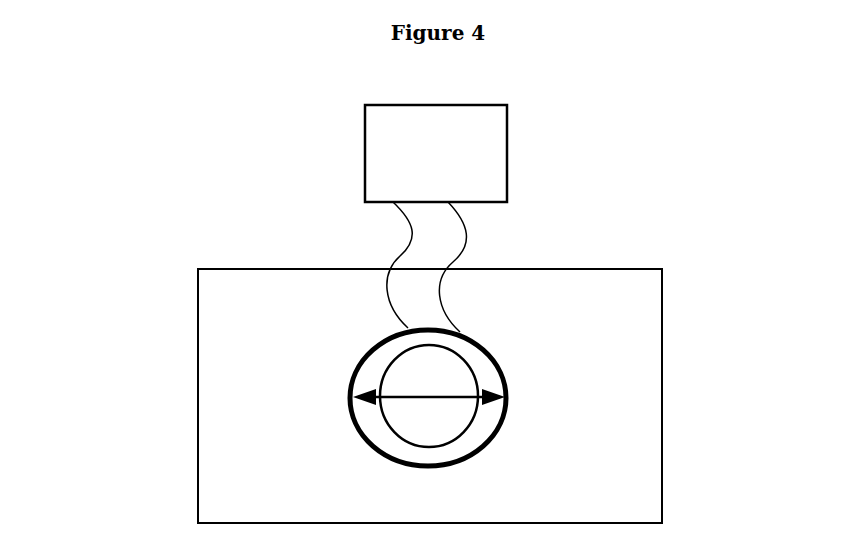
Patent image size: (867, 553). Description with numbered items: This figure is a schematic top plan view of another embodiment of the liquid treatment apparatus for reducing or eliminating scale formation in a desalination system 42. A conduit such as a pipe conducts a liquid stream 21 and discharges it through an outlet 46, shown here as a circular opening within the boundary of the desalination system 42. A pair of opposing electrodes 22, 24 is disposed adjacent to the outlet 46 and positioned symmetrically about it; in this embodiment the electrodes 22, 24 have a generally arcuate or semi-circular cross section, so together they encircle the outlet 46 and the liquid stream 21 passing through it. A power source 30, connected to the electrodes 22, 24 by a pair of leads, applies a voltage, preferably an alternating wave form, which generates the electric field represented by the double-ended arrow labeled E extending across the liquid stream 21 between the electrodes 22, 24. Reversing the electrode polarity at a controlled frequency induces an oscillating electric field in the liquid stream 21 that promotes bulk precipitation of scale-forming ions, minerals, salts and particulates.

The liquid stream 21 is at (280, 438).
The electrode 22 is at (357, 372).
The electrode 24 is at (503, 373).
The power source 30 is at (487, 149).
The desalination system 42 is at (429, 396).
The outlet 46 is at (458, 380).